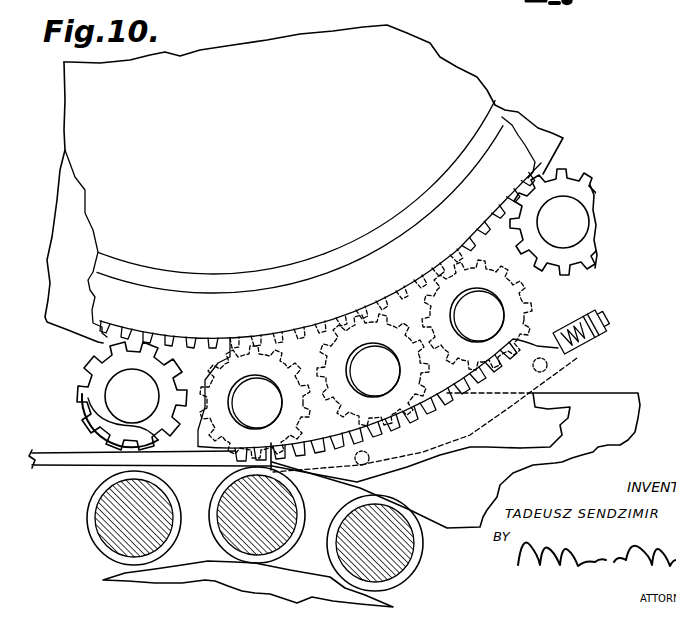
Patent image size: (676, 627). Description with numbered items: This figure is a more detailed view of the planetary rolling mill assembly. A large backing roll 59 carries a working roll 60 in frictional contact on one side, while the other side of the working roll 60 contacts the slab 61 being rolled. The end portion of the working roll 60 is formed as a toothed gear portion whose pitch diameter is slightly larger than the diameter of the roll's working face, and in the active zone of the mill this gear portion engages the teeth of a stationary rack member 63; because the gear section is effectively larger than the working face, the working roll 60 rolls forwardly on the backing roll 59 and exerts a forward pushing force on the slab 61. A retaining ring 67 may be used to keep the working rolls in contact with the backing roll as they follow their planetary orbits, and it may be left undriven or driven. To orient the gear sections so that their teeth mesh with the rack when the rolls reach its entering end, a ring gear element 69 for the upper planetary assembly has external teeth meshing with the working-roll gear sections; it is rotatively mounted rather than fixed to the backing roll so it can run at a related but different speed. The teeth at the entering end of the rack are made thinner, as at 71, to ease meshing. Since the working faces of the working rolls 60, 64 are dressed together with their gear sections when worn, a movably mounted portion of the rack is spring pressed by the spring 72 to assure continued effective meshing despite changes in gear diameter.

The backing roll 59 is at (304, 184).
The working roll 60 is at (92, 422).
The slab 61 is at (622, 398).
The stationary rack member 63 is at (387, 410).
The working roll 64 is at (227, 490).
The retaining ring 67 is at (312, 322).
The ring gear element 69 is at (358, 255).
The thinner teeth at the entering end of the rack 71 is at (520, 357).
The spring 72 is at (590, 353).